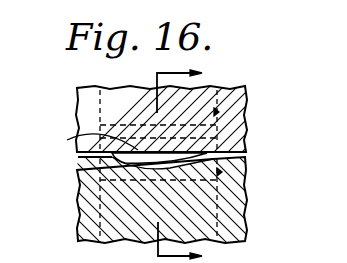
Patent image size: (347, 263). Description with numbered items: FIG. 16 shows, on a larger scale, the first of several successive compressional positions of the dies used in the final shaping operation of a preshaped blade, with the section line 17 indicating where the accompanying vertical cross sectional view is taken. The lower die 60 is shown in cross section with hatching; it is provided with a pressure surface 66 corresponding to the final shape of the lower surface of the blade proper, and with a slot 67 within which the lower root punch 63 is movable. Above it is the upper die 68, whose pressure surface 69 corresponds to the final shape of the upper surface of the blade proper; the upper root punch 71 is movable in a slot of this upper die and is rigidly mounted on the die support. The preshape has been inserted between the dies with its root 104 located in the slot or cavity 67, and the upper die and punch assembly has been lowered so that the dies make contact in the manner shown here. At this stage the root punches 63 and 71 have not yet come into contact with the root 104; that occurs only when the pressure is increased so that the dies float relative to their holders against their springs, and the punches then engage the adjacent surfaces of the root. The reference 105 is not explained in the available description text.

The section line 17— 17 is at (198, 160).
The lower die 60 is at (82, 222).
The root punch 63 is at (249, 229).
The pressure surface 66 is at (130, 169).
The slot 67 is at (249, 170).
The upper die 68 is at (80, 100).
The pressure surface 69 is at (205, 152).
The upper root punch 71 is at (248, 97).
The root 104 is at (250, 122).
The lip 105 is at (76, 139).